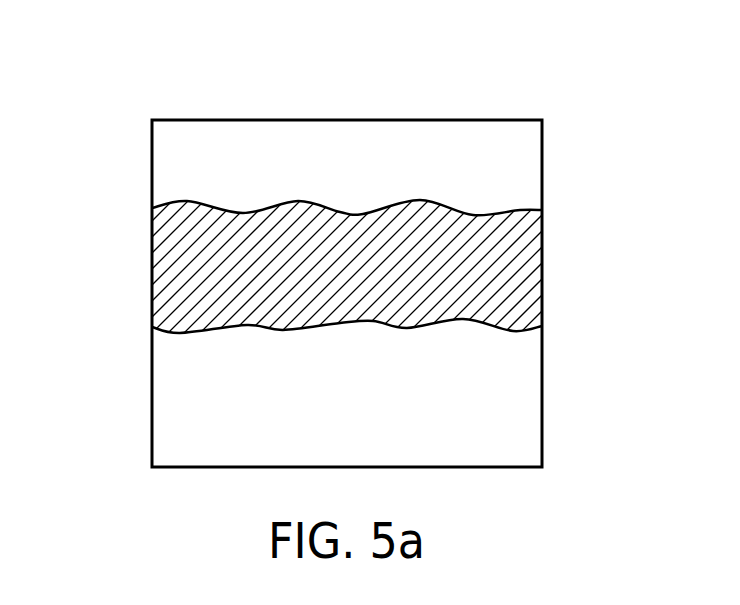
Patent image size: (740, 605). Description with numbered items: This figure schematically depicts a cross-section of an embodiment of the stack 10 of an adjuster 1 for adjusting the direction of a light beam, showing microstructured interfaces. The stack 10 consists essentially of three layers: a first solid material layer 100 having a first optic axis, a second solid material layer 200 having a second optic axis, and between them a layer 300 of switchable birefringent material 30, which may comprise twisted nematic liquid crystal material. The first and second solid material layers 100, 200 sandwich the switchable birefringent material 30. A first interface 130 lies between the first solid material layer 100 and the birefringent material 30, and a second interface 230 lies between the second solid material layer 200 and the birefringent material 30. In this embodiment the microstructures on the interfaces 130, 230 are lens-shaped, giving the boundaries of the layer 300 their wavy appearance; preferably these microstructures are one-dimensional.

The adjuster 1 is at (95, 77).
The stack 10 is at (563, 92).
The first solid material layer 100 is at (155, 165).
The second solid material layer 200 is at (155, 398).
The layer of switchable birefringent material 300 is at (155, 288).
The switchable birefringent material 30 is at (155, 255).
The first interface 130 is at (517, 211).
The second interface 230 is at (517, 331).